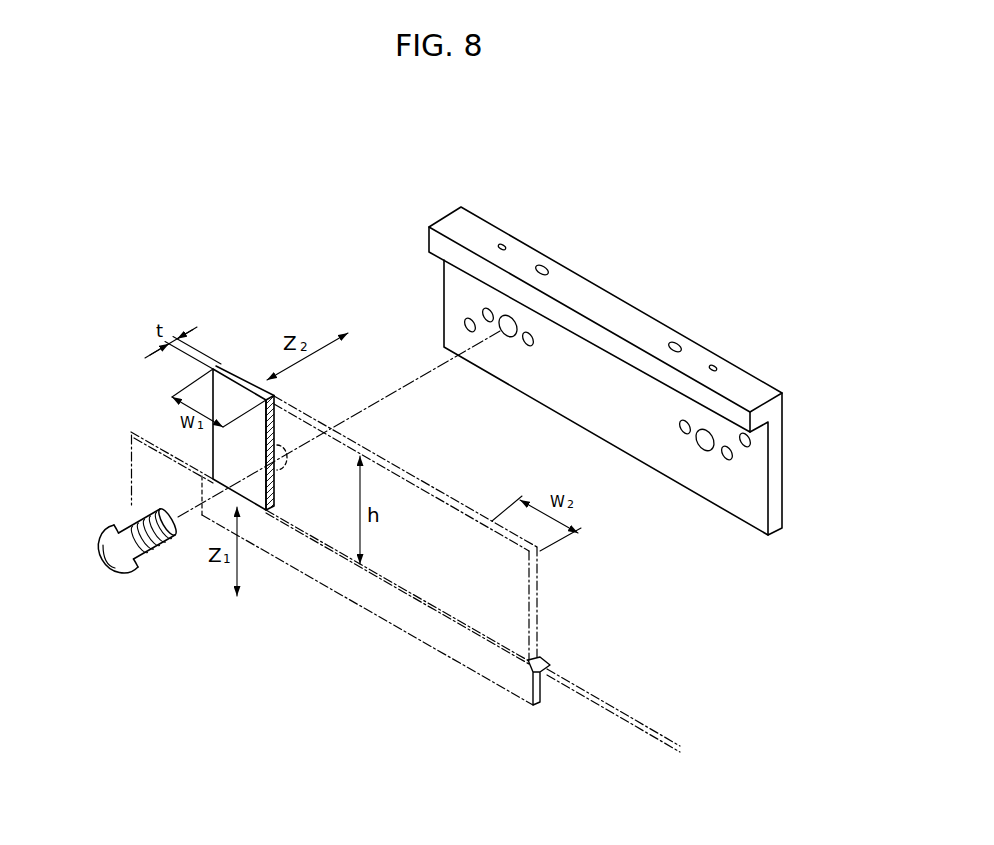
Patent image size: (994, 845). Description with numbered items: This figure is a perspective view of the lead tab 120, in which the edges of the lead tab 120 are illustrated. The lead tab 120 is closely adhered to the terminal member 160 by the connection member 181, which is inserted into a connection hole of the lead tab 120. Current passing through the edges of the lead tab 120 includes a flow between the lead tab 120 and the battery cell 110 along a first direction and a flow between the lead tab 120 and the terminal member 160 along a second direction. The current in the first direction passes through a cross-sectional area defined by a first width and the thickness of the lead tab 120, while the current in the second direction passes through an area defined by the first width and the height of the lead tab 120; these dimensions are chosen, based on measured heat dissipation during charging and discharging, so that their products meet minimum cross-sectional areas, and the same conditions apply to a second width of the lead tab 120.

The battery cell 110 is at (610, 707).
The lead tab 120 is at (538, 597).
The terminal member 160 is at (622, 312).
The connection member 181 is at (133, 559).